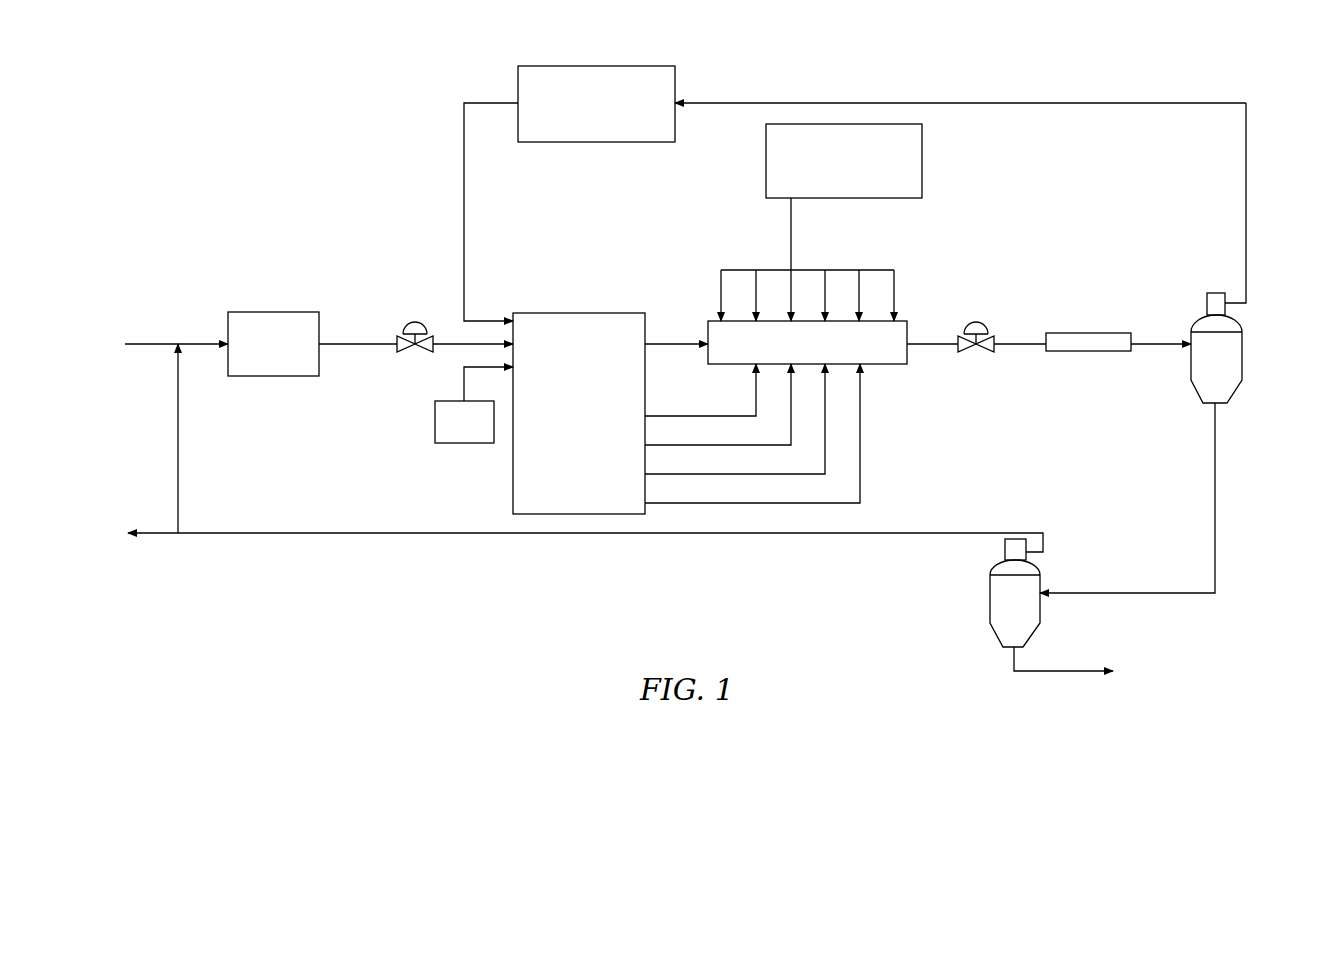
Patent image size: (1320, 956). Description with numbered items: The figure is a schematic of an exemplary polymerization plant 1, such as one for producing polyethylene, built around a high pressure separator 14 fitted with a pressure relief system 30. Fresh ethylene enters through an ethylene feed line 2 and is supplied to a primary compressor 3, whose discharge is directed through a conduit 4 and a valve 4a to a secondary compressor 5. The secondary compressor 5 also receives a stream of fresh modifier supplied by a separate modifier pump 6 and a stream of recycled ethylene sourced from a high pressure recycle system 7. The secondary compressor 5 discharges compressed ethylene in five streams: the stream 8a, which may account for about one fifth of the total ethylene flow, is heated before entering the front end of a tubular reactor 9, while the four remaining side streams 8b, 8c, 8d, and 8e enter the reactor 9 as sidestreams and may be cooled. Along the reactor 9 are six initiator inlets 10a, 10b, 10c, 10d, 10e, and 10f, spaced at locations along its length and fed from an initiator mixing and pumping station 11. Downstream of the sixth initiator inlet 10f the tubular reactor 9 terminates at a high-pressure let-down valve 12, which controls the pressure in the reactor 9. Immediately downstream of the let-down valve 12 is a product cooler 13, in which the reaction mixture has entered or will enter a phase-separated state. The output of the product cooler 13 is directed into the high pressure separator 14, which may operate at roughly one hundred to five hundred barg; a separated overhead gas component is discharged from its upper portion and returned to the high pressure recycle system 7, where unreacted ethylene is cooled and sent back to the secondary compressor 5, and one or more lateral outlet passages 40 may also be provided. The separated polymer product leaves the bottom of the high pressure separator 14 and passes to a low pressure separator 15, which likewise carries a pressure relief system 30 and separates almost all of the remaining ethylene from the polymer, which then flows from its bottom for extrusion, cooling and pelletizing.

The polymerization plant 1 is at (237, 195).
The ethylene feed line 2 is at (160, 344).
The primary compressor 3 is at (262, 312).
The conduit 4 is at (368, 344).
The valve 4a is at (415, 326).
The secondary compressor 5 is at (513, 470).
The modifier pump 6 is at (435, 420).
The high pressure recycle system 7 is at (560, 66).
The ethylene stream 8a is at (663, 344).
The ethylene side stream 8b is at (676, 416).
The ethylene side stream 8c is at (712, 445).
The ethylene side stream 8d is at (748, 474).
The ethylene side stream 8e is at (780, 503).
The tubular reactor 9 is at (888, 364).
The initiator inlet 10a is at (712, 282).
The initiator inlet 10b is at (747, 282).
The initiator inlet 10c is at (782, 282).
The initiator inlet 10d is at (833, 282).
The initiator inlet 10e is at (866, 282).
The initiator inlet 10f is at (898, 282).
The initiator mixing and pumping station 11 is at (766, 160).
The high-pressure let-down valve 12 is at (978, 322).
The product cooler 13 is at (1086, 351).
The high pressure separator 14 is at (1191, 372).
The low pressure separator 15 is at (990, 600).
The pressure relief system 30 is at (1207, 303).
The lateral outlet passage 40 is at (1242, 327).